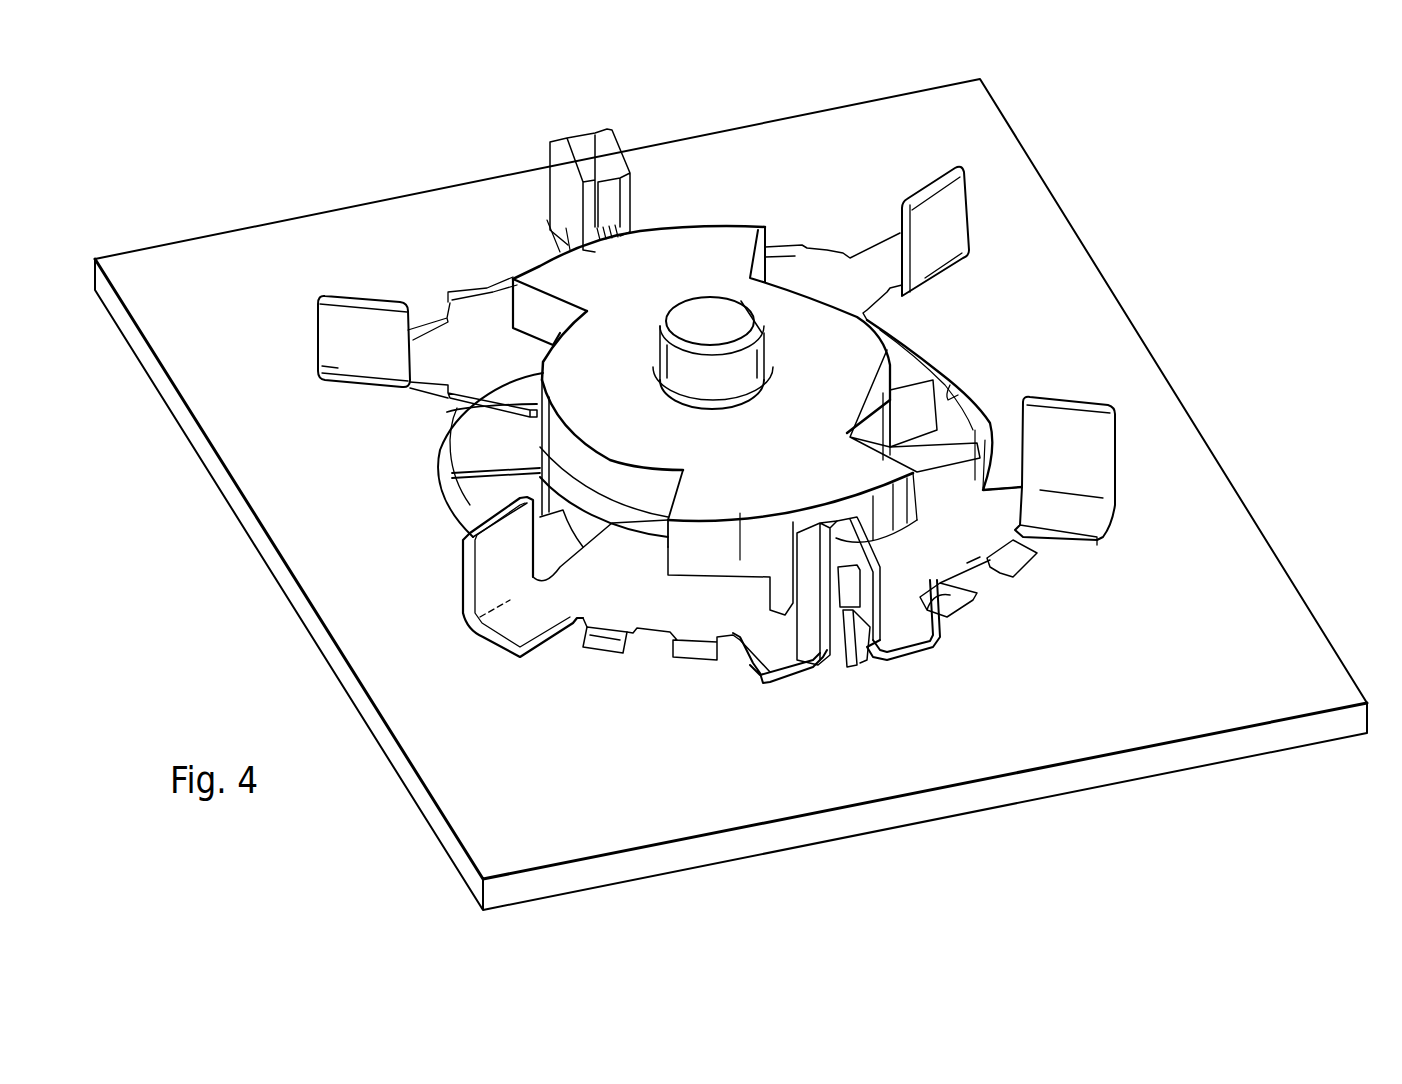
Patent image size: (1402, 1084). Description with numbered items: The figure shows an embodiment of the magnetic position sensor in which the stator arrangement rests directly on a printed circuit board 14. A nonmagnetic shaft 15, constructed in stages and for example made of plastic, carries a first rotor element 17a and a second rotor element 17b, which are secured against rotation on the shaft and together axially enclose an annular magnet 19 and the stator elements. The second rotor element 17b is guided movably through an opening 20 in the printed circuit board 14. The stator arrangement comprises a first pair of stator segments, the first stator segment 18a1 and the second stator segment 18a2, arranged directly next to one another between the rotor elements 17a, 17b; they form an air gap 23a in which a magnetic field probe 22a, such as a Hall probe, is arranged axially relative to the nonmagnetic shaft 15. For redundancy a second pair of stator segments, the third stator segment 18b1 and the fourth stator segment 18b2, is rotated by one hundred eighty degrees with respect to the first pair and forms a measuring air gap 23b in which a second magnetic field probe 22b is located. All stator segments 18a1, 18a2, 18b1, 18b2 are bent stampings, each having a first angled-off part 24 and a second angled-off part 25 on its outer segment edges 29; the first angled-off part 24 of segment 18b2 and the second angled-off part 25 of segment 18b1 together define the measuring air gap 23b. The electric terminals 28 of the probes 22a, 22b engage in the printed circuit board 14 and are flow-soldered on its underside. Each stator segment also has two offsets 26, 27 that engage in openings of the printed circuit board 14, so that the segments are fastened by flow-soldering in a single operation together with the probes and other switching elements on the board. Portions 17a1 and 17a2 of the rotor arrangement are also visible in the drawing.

The printed circuit board 14 is at (135, 262).
The nonmagnetic shaft 15 is at (722, 317).
The first rotor element 17a is at (540, 373).
The blade portion 17a1 is at (712, 250).
The blade portion 17a2 is at (743, 580).
The second rotor element 17b is at (918, 370).
The first stator segment 18a1 is at (810, 272).
The second stator segment 18a2 is at (457, 330).
The third stator segment 18b1 is at (967, 560).
The fourth stator segment 18b2 is at (573, 620).
The annular magnet 19 is at (447, 503).
The opening 20 is at (950, 388).
The magnetic field probe 22a is at (583, 145).
The second magnetic field probe 22b is at (867, 640).
The air gap 23a is at (619, 235).
The measuring air gap 23b is at (850, 575).
The first angled-off part 24 is at (810, 557).
The second angled-off part 25 is at (850, 595).
The offset 26 is at (690, 648).
The offset 27 is at (600, 640).
The electric terminals 28 is at (866, 650).
The outer segment edges 29 is at (577, 543).